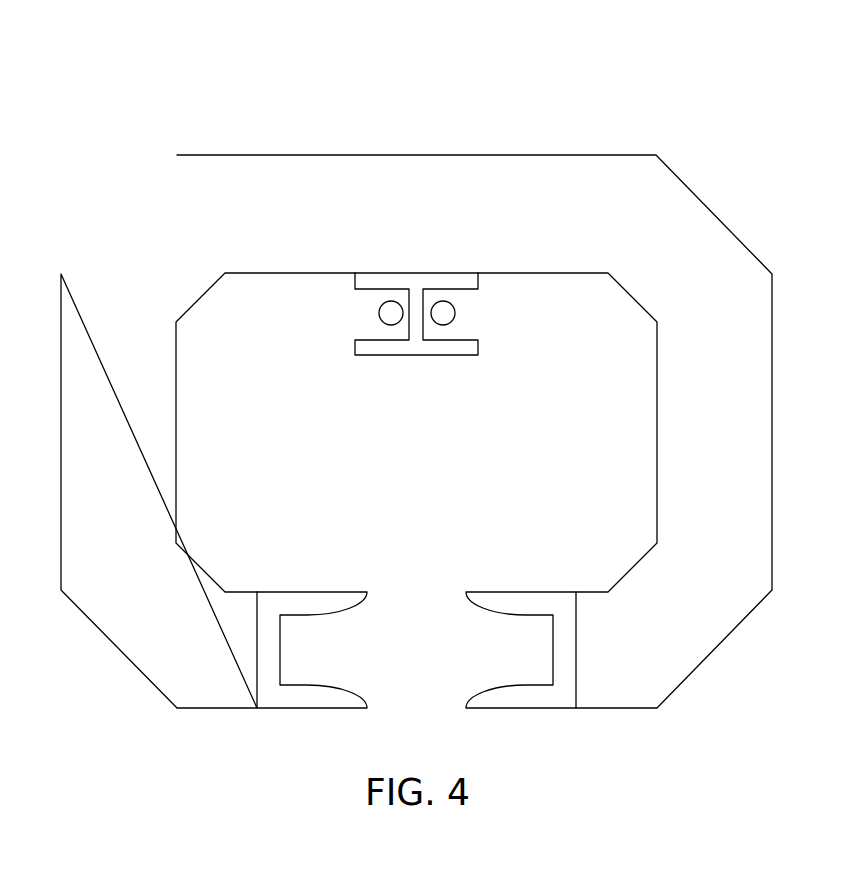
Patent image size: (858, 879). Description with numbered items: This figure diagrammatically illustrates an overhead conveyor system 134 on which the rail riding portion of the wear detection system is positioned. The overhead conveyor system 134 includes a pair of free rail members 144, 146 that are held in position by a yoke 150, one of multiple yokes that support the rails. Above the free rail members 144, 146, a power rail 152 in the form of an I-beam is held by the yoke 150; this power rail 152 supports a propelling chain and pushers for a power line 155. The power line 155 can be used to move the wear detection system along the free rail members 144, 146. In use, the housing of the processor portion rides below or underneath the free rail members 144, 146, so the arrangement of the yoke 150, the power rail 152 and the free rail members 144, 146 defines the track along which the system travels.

The overhead conveyor system 134 is at (447, 370).
The yoke 150 is at (764, 324).
The power rail 152 is at (440, 266).
The power line 155 is at (456, 313).
The free rail member 144 is at (308, 581).
The free rail member 146 is at (526, 581).